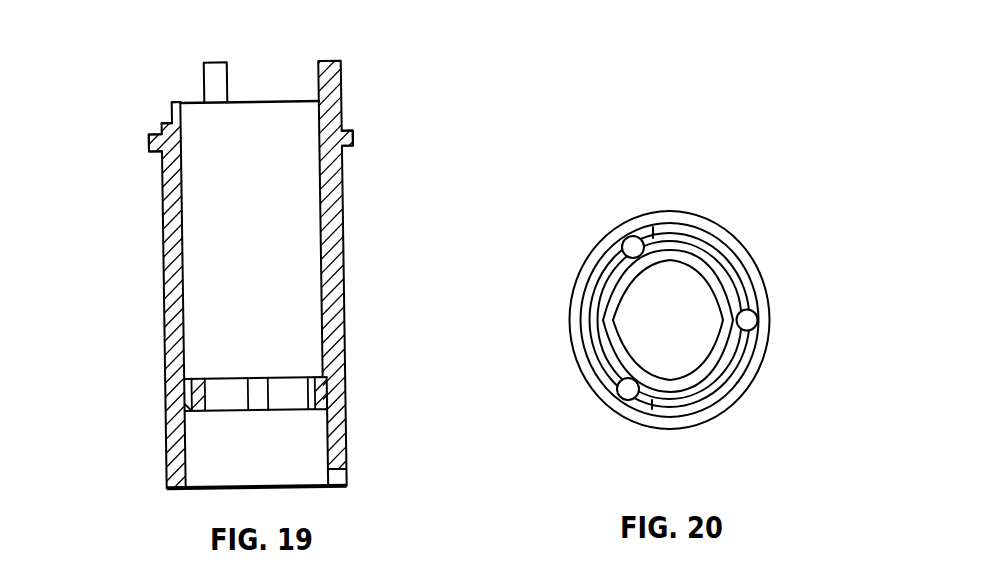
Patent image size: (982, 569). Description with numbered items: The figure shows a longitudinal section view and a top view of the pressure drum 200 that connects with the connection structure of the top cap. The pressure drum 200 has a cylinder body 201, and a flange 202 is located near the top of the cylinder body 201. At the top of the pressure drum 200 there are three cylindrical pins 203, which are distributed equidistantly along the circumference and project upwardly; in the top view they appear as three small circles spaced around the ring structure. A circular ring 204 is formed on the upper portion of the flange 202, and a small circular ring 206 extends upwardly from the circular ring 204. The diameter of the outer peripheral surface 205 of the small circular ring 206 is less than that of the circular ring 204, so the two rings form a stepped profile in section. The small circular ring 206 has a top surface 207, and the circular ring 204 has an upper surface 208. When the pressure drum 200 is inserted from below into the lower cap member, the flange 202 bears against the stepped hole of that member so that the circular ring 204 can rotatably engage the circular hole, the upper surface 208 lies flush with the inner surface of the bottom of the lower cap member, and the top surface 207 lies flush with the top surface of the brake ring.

In FIG. 19, the pressure drum 200 is at (274, 255).
In FIG. 20, the pressure drum 200 is at (655, 272).
In FIG. 19, the cylinder body 201 is at (345, 325).
In FIG. 19, the flange 202 is at (352, 138).
In FIG. 20, the flange 202 is at (736, 389).
In FIG. 19, the cylindrical pins 203 is at (340, 72).
In FIG. 20, the cylindrical pins 203 is at (757, 318).
In FIG. 19, the circular ring 204 is at (150, 133).
In FIG. 20, the circular ring 204 is at (592, 288).
In FIG. 19, the outer peripheral surface 205 is at (172, 115).
In FIG. 20, the outer peripheral surface 205 is at (585, 340).
In FIG. 19, the small circular ring 206 is at (180, 103).
In FIG. 20, the small circular ring 206 is at (593, 378).
In FIG. 19, the top surface 207 is at (177, 100).
In FIG. 19, the upper surface 208 is at (172, 113).